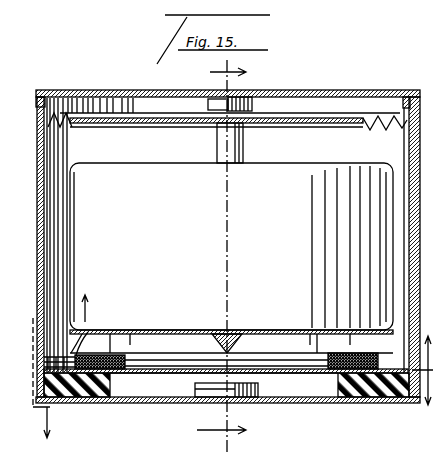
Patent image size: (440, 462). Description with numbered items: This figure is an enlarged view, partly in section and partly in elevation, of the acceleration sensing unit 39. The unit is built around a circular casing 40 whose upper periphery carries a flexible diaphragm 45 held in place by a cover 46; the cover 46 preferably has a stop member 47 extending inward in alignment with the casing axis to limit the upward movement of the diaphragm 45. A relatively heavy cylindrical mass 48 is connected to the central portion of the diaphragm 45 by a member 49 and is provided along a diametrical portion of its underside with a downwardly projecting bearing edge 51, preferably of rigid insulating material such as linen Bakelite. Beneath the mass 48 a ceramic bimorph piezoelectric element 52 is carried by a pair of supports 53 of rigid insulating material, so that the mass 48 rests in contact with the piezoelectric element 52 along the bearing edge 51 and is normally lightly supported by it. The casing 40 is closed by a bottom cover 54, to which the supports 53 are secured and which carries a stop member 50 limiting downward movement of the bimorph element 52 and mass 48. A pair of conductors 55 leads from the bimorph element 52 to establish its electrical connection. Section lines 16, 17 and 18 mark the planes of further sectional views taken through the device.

The section line 16- 16 is at (209, 257).
The section line 17- 17 is at (258, 337).
The section line 18- 18 is at (236, 386).
The acceleration sensing unit 39 is at (367, 91).
The circular casing 40 is at (408, 142).
The flexible diaphragm 45 is at (310, 124).
The cover 46 is at (296, 90).
The stop member 47 is at (200, 99).
The cylindrical mass 48 is at (213, 214).
The connecting member 49 is at (218, 146).
The stop member 50 is at (256, 392).
The bearing edge 51 is at (240, 343).
The ceramic bimorph piezoelectric element 52 is at (168, 353).
The supports 53 is at (82, 406).
The bottom cover 54 is at (318, 404).
The conductors 55 is at (80, 330).